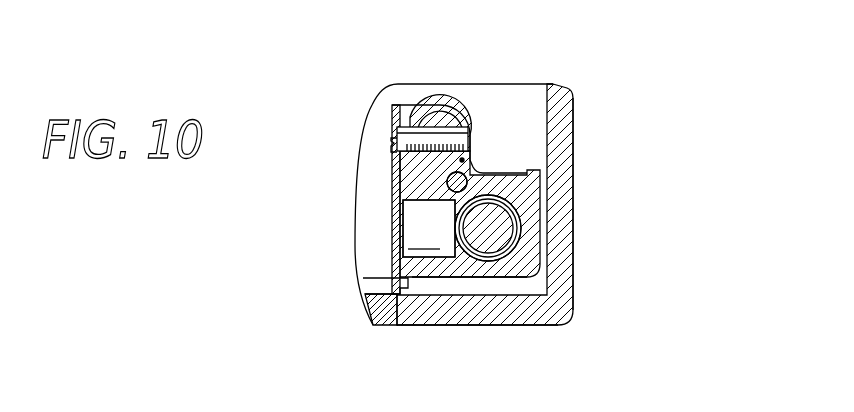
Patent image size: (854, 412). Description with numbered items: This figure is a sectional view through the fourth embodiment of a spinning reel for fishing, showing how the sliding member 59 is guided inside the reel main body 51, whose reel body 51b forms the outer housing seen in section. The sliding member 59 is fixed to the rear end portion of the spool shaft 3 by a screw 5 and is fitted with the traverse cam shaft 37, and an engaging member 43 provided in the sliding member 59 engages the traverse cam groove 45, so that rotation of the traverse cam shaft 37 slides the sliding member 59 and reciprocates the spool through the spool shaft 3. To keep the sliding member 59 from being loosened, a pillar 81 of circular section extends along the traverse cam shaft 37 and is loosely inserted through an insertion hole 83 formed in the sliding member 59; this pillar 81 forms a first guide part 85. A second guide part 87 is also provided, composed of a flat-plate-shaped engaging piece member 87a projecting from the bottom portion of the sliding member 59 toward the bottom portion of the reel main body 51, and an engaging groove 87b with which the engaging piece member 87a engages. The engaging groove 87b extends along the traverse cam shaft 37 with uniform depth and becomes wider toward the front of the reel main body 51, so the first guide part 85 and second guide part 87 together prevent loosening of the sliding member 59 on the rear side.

The spool shaft 3 is at (378, 107).
The screw 5 is at (392, 139).
The traverse cam shaft 37 is at (505, 223).
The engaging member 43 is at (410, 213).
The traverse cam groove 45 is at (512, 272).
The reel main body 51 is at (568, 111).
The reel body 51b is at (570, 193).
The sliding member 59 is at (528, 172).
The pillar 81 is at (477, 170).
The insertion hole 83 is at (393, 185).
The first guide part 85 is at (462, 160).
The second guide part 87 is at (384, 300).
The engaging piece member 87a is at (363, 278).
The engaging groove 87b is at (437, 325).